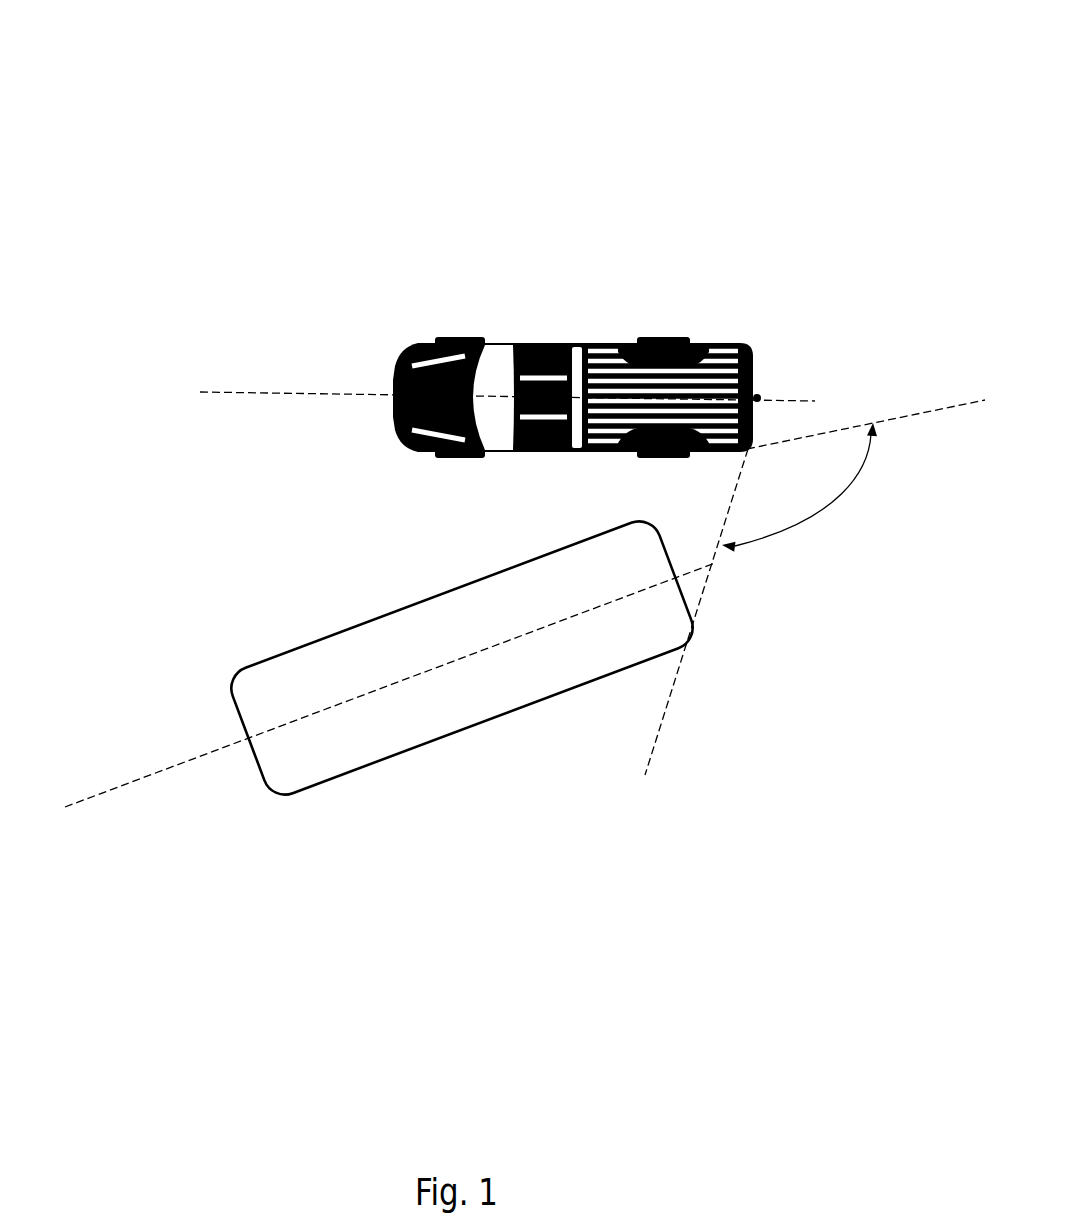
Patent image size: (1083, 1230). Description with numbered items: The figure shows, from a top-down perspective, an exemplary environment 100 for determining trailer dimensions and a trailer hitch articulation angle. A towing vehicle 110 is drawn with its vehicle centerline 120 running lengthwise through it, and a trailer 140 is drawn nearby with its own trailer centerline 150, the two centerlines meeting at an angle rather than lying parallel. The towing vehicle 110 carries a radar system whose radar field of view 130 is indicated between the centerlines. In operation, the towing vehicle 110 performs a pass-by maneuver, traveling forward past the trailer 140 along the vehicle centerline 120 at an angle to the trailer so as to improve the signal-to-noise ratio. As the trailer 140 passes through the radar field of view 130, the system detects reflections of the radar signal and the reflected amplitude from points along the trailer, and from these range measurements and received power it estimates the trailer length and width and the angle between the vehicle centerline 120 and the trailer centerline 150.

The exemplary environment 100 is at (490, 34).
The towing vehicle 110 is at (462, 320).
The vehicle centerline 120 is at (265, 372).
The radar field of view 130 is at (815, 587).
The trailer 140 is at (545, 712).
The trailer centerline 150 is at (180, 782).